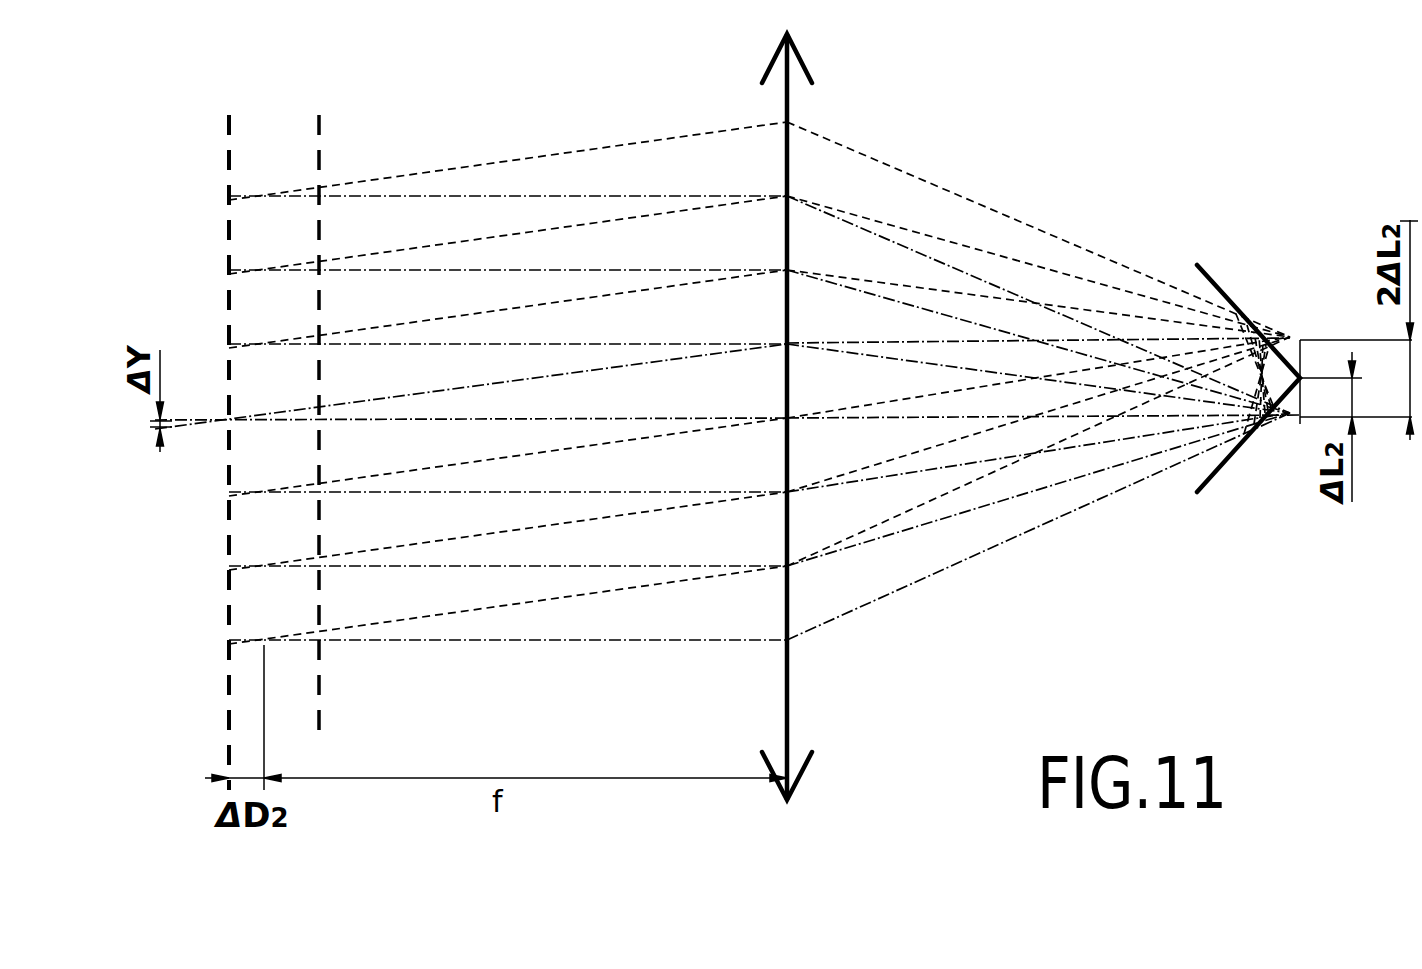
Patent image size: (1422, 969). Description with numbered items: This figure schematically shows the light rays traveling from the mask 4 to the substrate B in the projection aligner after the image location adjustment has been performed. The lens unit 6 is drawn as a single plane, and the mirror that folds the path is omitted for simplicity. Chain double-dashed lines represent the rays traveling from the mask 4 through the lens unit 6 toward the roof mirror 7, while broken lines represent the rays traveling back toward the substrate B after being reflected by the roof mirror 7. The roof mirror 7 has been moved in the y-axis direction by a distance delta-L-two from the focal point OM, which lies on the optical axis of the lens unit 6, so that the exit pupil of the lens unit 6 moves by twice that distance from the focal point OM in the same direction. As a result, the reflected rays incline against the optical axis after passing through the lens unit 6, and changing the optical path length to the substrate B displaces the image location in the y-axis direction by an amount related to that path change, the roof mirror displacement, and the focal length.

The substrate B is at (229, 120).
The mask 4 is at (319, 120).
The lens unit 6 is at (791, 682).
The roof mirror 7 is at (1218, 279).
The focal point OM is at (1300, 424).